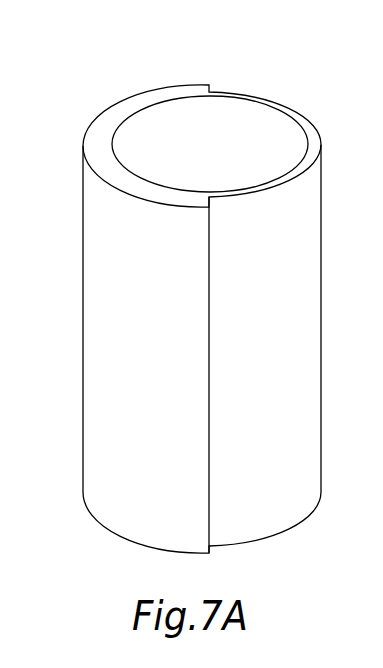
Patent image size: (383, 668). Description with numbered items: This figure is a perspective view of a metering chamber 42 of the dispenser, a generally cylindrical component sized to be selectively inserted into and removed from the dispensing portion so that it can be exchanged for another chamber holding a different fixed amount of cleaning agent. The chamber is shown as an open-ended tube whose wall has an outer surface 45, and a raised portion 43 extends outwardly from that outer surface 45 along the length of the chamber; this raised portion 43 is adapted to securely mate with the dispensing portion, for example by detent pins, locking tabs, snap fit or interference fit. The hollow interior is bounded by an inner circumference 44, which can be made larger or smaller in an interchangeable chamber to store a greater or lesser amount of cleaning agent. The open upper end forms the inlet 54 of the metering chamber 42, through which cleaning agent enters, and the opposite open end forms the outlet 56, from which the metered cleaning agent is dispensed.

The metering chamber 42 is at (201, 298).
The raised portion 43 is at (99, 318).
The inner circumference 44 is at (148, 107).
The outer surface 45 is at (311, 312).
The inlet 54 is at (282, 131).
The outlet 56 is at (297, 565).